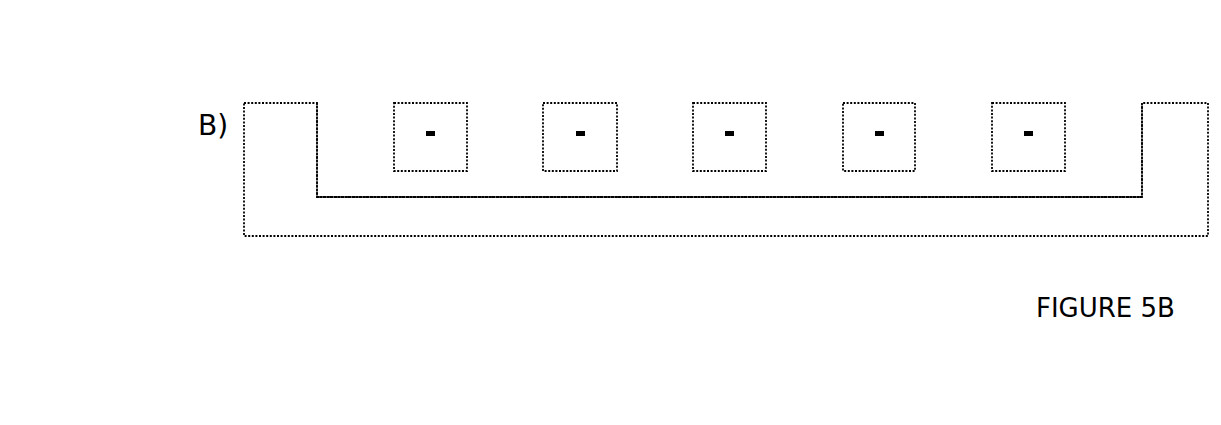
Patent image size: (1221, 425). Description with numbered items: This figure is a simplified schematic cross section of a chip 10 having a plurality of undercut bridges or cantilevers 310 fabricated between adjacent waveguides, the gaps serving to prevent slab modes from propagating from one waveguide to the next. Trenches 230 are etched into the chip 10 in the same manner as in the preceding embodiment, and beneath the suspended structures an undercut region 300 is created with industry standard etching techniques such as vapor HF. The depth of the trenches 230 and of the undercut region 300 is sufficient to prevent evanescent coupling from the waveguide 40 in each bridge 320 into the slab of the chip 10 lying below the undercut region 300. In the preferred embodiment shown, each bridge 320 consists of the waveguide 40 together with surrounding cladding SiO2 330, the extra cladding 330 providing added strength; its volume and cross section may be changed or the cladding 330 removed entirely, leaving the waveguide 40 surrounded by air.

The chip 10 is at (243, 100).
The trenches 230 is at (353, 110).
The waveguide 40 is at (432, 125).
The undercut bridges and/or cantilevers 310 is at (515, 190).
The undercut region 300 is at (590, 183).
The bridge 320 is at (625, 103).
The cladding SiO2 330 is at (745, 117).